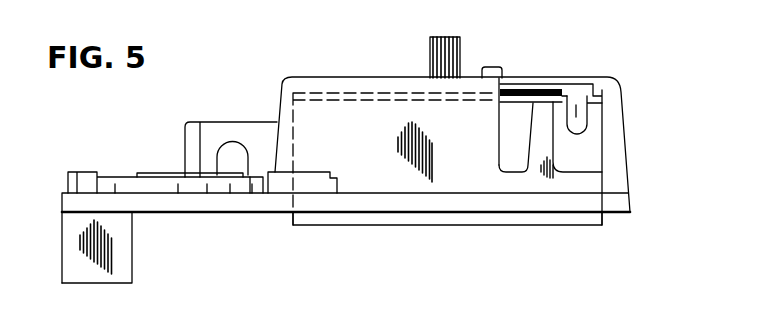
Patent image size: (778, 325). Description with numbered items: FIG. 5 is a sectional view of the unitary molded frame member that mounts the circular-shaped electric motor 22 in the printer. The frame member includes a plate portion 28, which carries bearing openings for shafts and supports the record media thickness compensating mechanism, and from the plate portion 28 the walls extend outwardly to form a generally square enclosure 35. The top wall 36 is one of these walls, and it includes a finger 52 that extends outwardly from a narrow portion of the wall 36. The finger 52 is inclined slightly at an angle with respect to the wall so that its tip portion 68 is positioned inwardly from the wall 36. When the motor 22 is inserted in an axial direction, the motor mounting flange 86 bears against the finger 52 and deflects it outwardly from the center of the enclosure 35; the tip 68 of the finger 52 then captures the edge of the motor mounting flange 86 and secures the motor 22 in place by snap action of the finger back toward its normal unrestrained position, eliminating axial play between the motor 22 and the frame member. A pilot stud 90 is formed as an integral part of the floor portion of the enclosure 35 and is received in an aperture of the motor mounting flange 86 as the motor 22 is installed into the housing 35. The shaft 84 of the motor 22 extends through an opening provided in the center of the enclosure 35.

The electric motor 22 is at (455, 225).
The plate portion 28 is at (242, 203).
The enclosure 35 is at (434, 115).
The top wall 36 is at (373, 150).
The finger 52 is at (547, 151).
The tip portion 68 is at (542, 105).
The shaft 84 is at (447, 37).
The motor mounting flange 86 is at (523, 97).
The pilot stud 90 is at (583, 113).